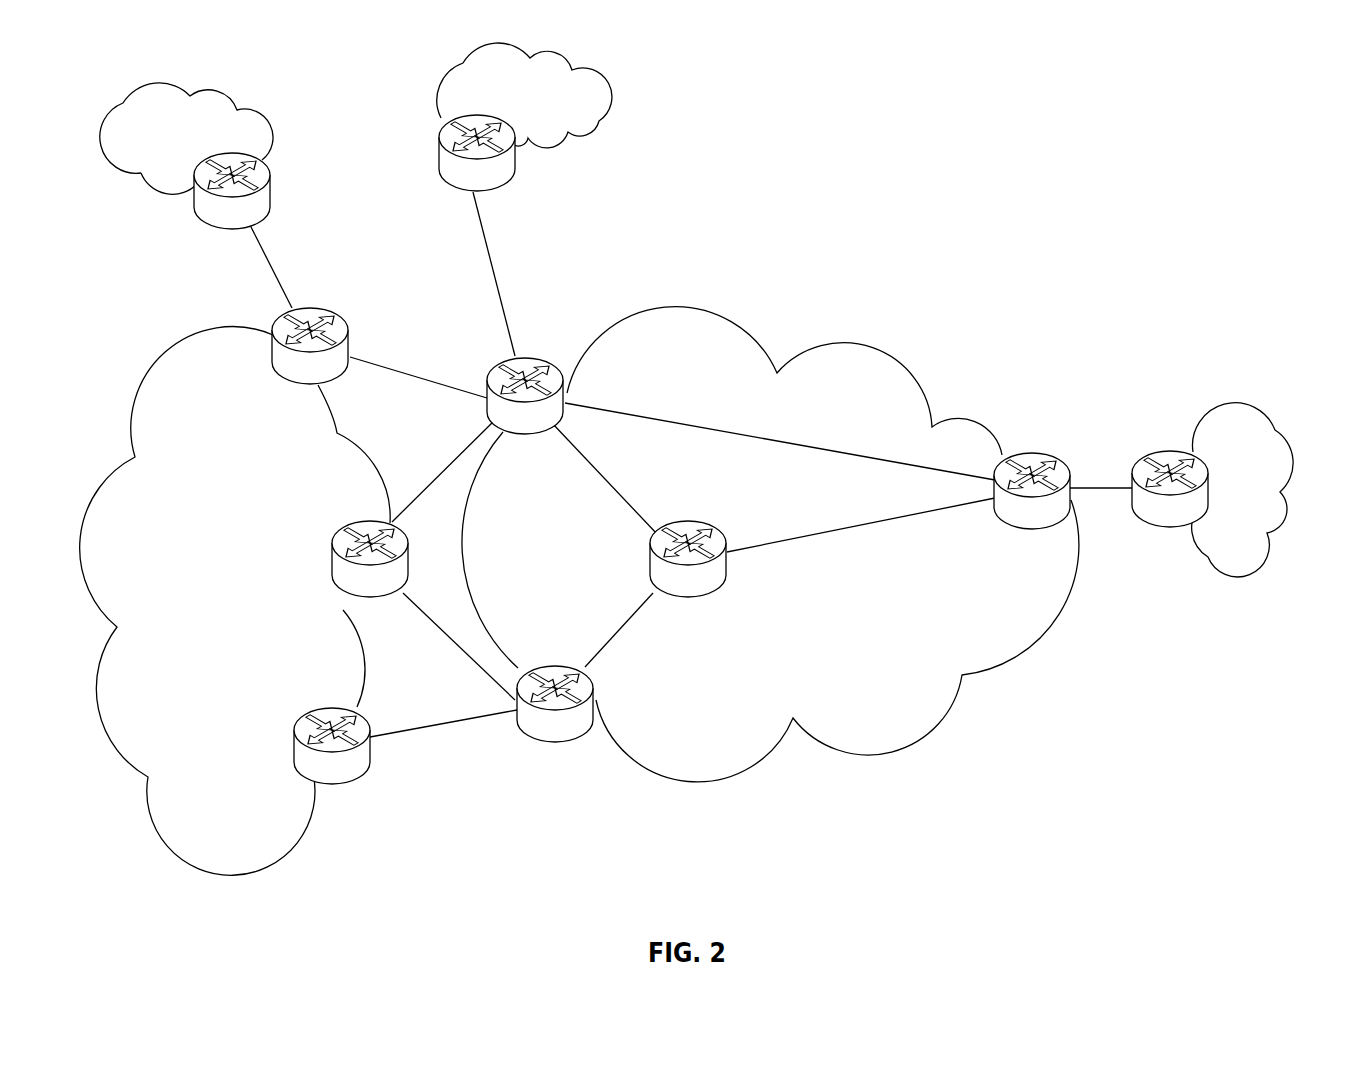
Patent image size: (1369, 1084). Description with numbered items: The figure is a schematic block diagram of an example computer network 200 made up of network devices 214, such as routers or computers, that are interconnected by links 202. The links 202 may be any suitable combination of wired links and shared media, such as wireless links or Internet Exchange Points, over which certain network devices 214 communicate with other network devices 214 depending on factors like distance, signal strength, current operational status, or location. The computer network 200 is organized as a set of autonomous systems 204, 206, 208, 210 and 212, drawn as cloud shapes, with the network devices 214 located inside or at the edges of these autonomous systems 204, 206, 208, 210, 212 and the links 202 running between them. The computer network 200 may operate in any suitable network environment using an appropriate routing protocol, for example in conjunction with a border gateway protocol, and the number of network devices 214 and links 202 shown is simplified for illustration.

The computer network 200 is at (1245, 108).
The links 202 is at (275, 267).
The autonomous system 204 is at (186, 138).
The autonomous system 206 is at (524, 95).
The autonomous system 208 is at (235, 601).
The autonomous system 210 is at (770, 544).
The autonomous system 212 is at (1242, 490).
The network devices 214 is at (213, 222).